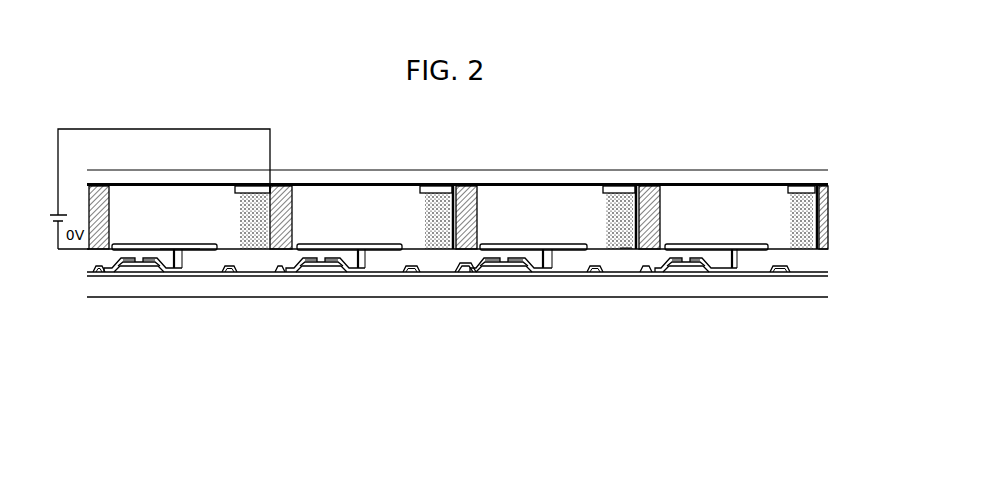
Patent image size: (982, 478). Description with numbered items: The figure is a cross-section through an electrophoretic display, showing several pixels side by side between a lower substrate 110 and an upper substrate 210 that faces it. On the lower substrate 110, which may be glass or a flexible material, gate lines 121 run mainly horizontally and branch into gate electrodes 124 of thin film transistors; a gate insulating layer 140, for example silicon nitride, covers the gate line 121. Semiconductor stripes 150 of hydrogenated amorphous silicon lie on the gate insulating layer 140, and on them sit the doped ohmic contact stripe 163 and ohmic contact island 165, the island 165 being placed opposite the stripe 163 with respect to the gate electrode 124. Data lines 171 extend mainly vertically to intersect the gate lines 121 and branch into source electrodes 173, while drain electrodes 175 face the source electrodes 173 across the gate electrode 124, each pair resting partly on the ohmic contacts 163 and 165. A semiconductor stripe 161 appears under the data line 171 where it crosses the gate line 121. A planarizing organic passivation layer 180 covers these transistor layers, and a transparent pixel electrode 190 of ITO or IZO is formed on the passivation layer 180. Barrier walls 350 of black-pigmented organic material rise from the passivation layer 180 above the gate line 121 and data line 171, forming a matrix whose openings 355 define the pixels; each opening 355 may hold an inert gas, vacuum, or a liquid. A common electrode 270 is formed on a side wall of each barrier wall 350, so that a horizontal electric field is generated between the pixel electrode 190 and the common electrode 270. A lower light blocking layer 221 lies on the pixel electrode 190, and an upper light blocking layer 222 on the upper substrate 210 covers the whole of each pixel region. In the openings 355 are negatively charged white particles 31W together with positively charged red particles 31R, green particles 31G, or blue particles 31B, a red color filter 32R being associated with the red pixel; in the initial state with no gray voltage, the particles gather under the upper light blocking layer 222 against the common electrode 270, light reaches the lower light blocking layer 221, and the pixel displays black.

The lower substrate 110 is at (188, 294).
The gate line 121 is at (230, 276).
The gate electrode 124 is at (319, 273).
The gate insulating layer 140 is at (156, 277).
The semiconductor stripe 150 is at (328, 267).
The semiconductor stripe 161 is at (462, 270).
The ohmic contact stripe 163 is at (312, 268).
The ohmic contact island 165 is at (338, 268).
The data line 171 is at (480, 266).
The source electrode 173 is at (302, 268).
The drain electrode 175 is at (371, 270).
The passivation layer 180 is at (428, 258).
The pixel electrode 190 is at (145, 247).
The upper substrate 210 is at (520, 173).
The lower light blocking layer 221 is at (185, 247).
The upper light blocking layer 222 is at (247, 196).
The common electrode 270 is at (293, 210).
The barrier wall 350 is at (286, 199).
The opening 355 is at (110, 199).
The white charged particle 31W is at (445, 197).
The red charged particle 31R is at (797, 200).
The green charged particle 31G is at (430, 200).
The blue charged particle 31B is at (615, 200).
The red color filter 32R is at (627, 250).